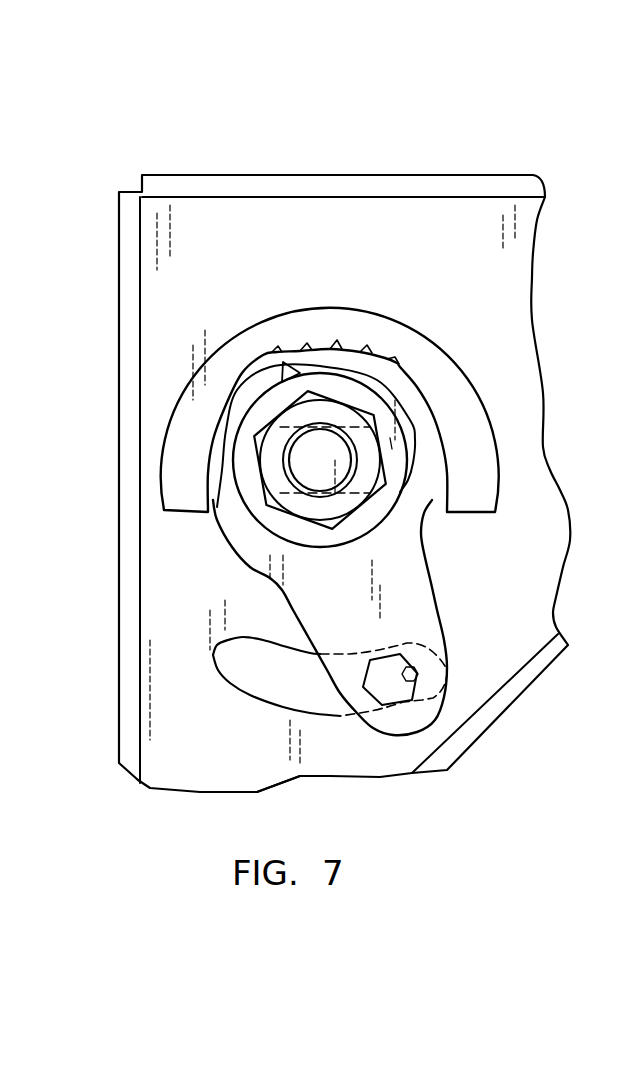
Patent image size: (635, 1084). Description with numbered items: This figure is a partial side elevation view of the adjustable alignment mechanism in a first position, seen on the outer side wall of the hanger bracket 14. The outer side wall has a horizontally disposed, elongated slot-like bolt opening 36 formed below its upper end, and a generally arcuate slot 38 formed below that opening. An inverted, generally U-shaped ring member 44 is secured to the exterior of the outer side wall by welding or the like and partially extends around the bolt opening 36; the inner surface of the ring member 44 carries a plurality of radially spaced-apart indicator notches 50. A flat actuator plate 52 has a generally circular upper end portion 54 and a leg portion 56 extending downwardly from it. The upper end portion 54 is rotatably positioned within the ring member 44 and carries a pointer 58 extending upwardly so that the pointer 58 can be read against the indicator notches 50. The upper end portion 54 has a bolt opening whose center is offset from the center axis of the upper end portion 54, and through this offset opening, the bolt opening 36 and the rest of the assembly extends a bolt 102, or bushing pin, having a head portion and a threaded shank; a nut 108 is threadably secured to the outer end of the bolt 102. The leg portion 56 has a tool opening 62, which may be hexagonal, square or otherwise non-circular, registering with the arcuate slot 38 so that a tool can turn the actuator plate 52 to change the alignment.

The hanger bracket 14 is at (467, 162).
The arcuate slot 38 is at (308, 700).
The ring member 44 is at (448, 340).
The indicator notches 50 is at (340, 330).
The pointer 58 is at (283, 372).
The upper end portion 54 is at (427, 483).
The nut 108 is at (376, 412).
The bolt opening 36 is at (390, 443).
The bolt 102 is at (320, 460).
The leg portion 56 is at (405, 592).
The actuator plate 52 is at (318, 599).
The tool opening 62 is at (410, 690).